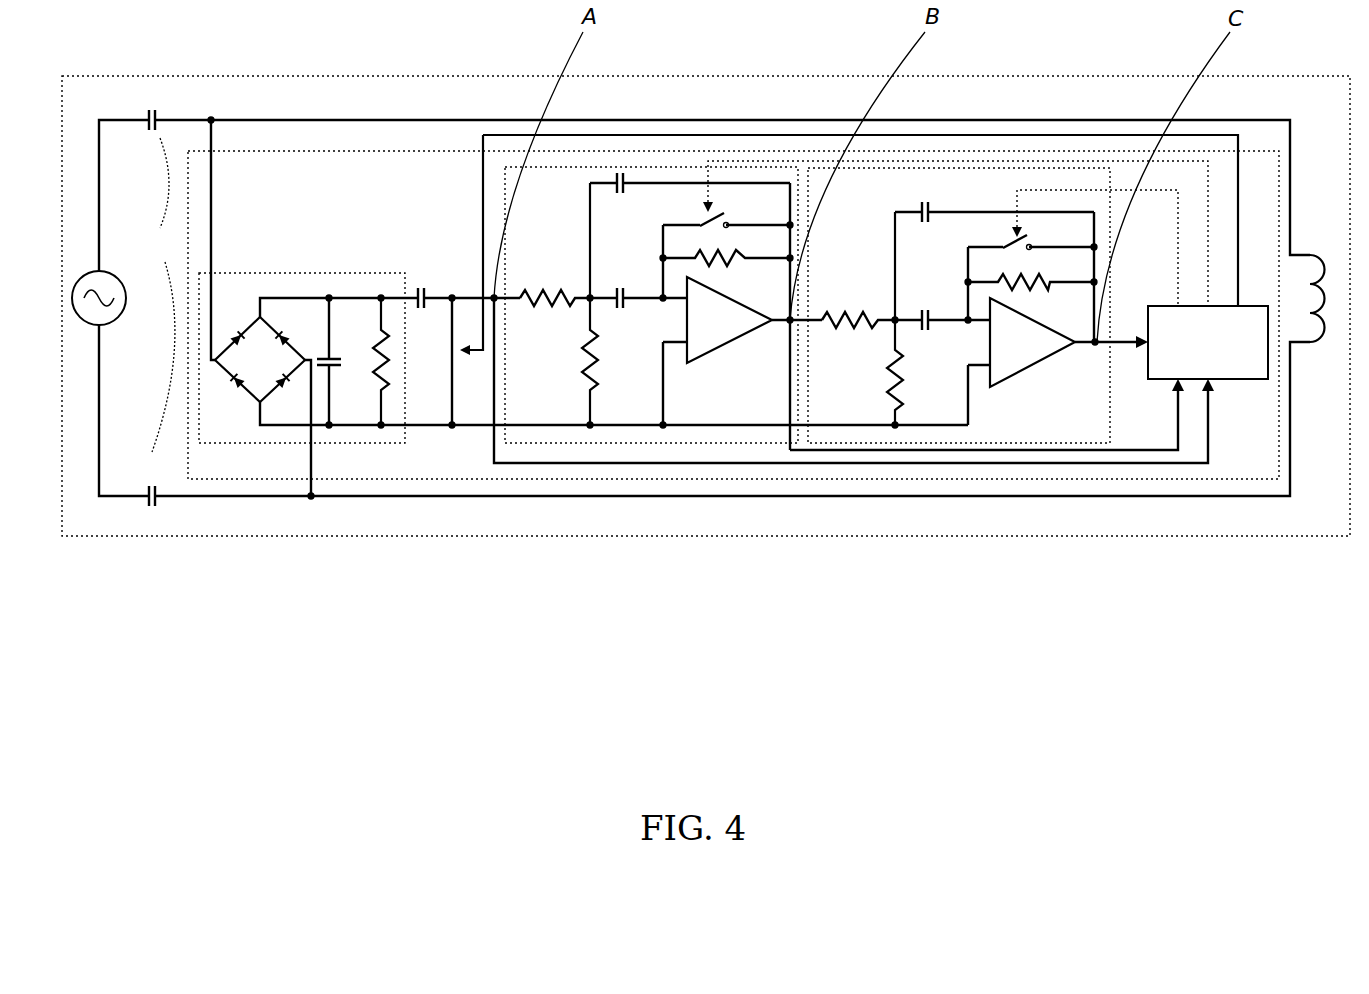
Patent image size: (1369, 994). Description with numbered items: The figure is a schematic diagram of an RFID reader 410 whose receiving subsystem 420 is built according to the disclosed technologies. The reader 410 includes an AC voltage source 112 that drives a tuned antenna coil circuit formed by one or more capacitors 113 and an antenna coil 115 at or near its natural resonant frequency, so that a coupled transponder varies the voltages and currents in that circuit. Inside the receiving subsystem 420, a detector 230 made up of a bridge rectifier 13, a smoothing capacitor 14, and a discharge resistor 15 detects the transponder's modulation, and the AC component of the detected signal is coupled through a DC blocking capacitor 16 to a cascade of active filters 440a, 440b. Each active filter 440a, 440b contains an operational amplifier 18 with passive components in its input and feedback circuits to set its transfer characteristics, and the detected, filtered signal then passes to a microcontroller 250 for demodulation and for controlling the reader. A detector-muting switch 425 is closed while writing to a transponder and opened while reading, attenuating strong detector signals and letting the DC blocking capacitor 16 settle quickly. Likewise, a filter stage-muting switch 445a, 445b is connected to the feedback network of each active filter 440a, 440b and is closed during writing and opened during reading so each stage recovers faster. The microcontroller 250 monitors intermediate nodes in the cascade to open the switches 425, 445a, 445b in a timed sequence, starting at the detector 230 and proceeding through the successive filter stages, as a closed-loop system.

The AC voltage source 112 is at (91, 273).
The capacitors 113 is at (151, 295).
The antenna coil 115 is at (1325, 342).
The bridge rectifier 13 is at (260, 359).
The smoothing capacitor 14 is at (337, 361).
The discharge resistor 15 is at (370, 361).
The DC blocking capacitor 16 is at (422, 286).
The operational amplifier 18 is at (754, 320).
The detector 230 is at (583, 308).
The microcontroller 250 is at (1198, 306).
The RFID reader 410 is at (362, 537).
The receiving subsystem 420 is at (352, 199).
The detector-muting switch 425 is at (452, 348).
The active filter 440a is at (849, 369).
The active filter 440b is at (993, 373).
The filter stage-muting switch 445a is at (706, 222).
The filter stage-muting switch 445b is at (1016, 247).